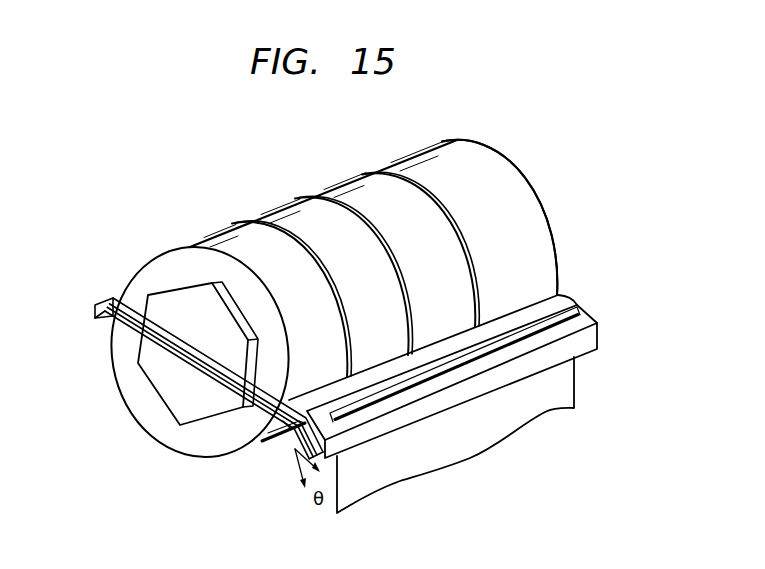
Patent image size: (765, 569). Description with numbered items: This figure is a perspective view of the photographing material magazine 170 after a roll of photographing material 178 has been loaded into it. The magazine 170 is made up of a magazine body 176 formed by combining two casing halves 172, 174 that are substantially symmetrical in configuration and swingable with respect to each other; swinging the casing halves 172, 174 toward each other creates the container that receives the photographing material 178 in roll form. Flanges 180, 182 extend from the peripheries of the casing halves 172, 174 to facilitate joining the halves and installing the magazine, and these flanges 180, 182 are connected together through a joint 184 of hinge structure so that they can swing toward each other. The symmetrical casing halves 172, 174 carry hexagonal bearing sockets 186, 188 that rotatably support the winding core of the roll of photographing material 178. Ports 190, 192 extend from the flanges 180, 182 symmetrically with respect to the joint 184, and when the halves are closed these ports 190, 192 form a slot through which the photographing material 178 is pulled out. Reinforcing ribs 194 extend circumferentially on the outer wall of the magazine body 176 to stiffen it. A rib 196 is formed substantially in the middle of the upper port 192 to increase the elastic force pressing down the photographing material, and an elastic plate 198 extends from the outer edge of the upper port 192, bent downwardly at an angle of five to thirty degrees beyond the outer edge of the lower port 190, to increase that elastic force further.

The photographing material magazine 170 is at (518, 160).
The casing half 172 is at (282, 442).
The casing half 174 is at (523, 197).
The magazine body 176 is at (543, 242).
The photographing material 178 is at (563, 397).
The flange 180 is at (105, 324).
The flange 182 is at (560, 297).
The joint 184 is at (107, 298).
The bearing socket 186 is at (173, 392).
The bearing socket 188 is at (187, 307).
The port 190 is at (297, 447).
The port 192 is at (597, 330).
The reinforcing rib 194 is at (263, 222).
The rib 196 is at (577, 317).
The elastic plate 198 is at (597, 342).